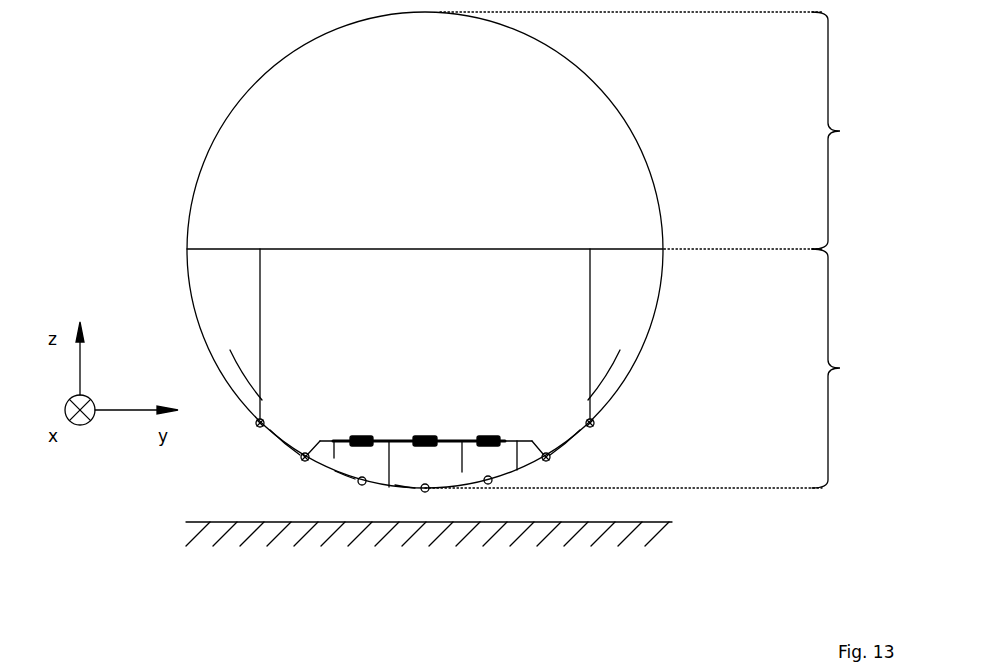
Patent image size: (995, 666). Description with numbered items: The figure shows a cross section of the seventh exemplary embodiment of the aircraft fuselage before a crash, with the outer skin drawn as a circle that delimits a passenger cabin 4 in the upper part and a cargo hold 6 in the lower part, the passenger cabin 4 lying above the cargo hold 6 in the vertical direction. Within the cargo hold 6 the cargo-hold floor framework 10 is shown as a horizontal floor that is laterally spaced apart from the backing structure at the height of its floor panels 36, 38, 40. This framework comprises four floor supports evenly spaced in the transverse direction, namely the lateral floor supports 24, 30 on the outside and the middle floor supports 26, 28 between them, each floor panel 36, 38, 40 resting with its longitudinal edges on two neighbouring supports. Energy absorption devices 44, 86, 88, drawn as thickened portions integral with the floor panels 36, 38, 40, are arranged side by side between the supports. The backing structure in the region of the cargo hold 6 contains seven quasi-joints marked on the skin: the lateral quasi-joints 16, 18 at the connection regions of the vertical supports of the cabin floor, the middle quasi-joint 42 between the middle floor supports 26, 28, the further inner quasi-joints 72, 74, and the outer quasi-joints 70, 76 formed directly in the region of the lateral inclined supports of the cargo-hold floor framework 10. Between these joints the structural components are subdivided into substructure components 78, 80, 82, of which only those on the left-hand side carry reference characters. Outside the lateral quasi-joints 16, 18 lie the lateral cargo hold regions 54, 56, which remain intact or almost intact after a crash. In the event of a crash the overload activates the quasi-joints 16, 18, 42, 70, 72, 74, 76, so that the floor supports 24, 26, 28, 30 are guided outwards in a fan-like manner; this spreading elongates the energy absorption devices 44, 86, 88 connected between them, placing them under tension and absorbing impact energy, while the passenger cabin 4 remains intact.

The passenger cabin 4 is at (654, 130).
The cargo hold 6 is at (646, 368).
The cargo-hold floor framework 10 is at (545, 406).
The lateral quasi-joint 16 is at (259, 427).
The lateral quasi-joint 18 is at (592, 426).
The lateral floor support 24 is at (333, 458).
The middle floor support 26 is at (389, 487).
The middle floor support 28 is at (490, 483).
The lateral floor support 30 is at (505, 442).
The floor panel 36 is at (343, 440).
The floor panel 38 is at (400, 440).
The floor panel 40 is at (468, 440).
The middle quasi-joint 42 is at (428, 491).
The energy absorption device 44 is at (425, 441).
The lateral cargo hold region 54 is at (246, 372).
The lateral cargo hold region 56 is at (608, 378).
The outer quasi-joint 70 is at (303, 460).
The further inner quasi-joint 72 is at (361, 485).
The further inner quasi-joint 74 is at (548, 461).
The outer quasi-joint 76 is at (536, 445).
The substructure component 78 is at (287, 443).
The substructure component 80 is at (345, 475).
The substructure component 82 is at (405, 490).
The energy absorption device 86 is at (361, 441).
The energy absorption device 88 is at (488, 441).